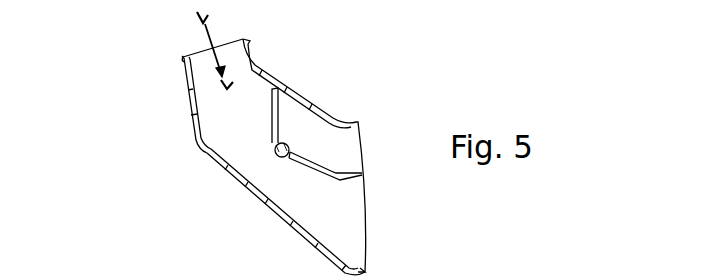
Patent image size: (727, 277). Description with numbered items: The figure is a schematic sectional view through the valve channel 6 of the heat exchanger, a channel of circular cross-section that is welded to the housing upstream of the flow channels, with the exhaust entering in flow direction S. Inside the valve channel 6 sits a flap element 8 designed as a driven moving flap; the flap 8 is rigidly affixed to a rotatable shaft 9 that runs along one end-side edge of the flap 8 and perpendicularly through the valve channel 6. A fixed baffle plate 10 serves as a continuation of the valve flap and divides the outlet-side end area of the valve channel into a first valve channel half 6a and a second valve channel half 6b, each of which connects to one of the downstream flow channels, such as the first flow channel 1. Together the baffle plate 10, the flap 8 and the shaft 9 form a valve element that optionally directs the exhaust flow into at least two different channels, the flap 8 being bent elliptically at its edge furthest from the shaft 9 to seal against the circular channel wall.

The valve channel 6 is at (226, 157).
The first valve channel half 6a is at (344, 117).
The second valve channel half 6b is at (337, 211).
The flap element 8 is at (278, 120).
The rotatable shaft 9 is at (290, 145).
The baffle plate 10 is at (330, 167).
The flow direction S is at (215, 50).
The first flow channel 1 is at (104, 274).